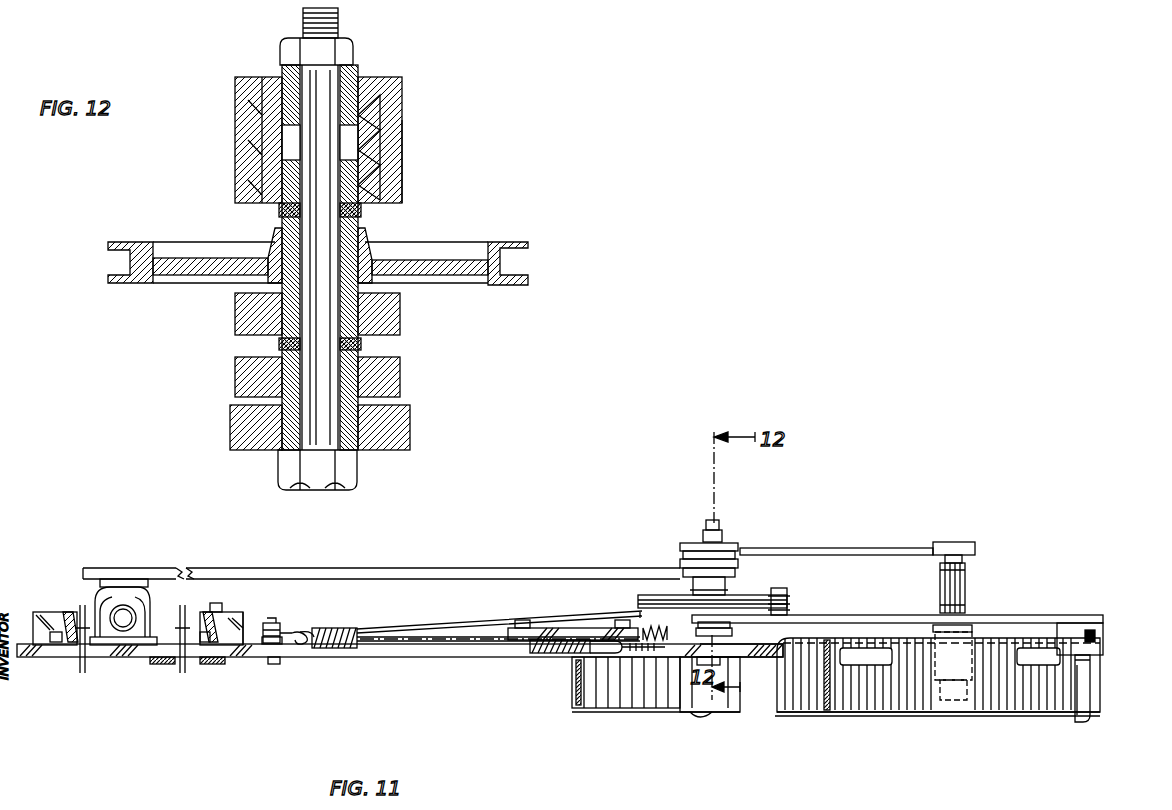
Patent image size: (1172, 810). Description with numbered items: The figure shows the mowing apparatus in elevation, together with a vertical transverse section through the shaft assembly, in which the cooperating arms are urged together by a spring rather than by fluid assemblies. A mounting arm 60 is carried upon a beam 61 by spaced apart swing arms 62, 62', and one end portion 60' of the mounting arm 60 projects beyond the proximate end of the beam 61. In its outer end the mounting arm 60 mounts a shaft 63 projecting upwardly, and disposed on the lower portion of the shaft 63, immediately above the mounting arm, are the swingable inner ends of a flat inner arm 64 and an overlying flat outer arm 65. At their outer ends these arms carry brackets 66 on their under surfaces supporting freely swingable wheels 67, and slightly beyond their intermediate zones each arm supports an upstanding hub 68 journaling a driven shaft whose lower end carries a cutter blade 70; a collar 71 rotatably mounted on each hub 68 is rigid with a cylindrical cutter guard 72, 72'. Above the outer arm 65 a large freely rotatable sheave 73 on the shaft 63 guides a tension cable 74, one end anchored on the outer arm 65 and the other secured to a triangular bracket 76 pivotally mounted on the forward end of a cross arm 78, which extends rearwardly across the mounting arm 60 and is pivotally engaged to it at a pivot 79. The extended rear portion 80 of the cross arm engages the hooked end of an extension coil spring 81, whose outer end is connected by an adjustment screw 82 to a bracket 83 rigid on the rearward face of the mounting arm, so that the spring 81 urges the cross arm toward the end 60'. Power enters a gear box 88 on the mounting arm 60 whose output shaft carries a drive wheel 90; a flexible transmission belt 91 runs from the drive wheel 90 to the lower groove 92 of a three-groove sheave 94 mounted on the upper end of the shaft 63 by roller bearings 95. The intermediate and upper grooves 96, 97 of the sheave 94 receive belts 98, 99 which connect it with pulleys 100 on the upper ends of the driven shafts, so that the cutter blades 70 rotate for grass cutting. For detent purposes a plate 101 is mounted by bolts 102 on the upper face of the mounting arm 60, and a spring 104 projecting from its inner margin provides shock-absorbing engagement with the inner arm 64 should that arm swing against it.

In FIG. 11, the mounting arm 60 is at (400, 688).
In FIG. 11, the projecting end portion of arm 60 60' is at (749, 700).
In FIG. 11, the beam 61 is at (272, 623).
In FIG. 11, the swing arm 62 is at (236, 590).
In FIG. 11, the swing arm 62' is at (51, 595).
In FIG. 12, the shaft 63 is at (338, 16).
In FIG. 11, the shaft 63 is at (718, 522).
In FIG. 12, the inner arm 64 is at (400, 315).
In FIG. 11, the inner arm 64 is at (685, 636).
In FIG. 12, the outer arm 65 is at (400, 372).
In FIG. 11, the outer arm 65 is at (1080, 615).
In FIG. 11, the bracket 66 is at (1103, 640).
In FIG. 11, the wheel 67 is at (1090, 700).
In FIG. 11, the upstanding hub 68 is at (972, 628).
In FIG. 11, the cutter blade 70 is at (600, 708).
In FIG. 11, the collar 71 is at (965, 635).
In FIG. 11, the cutter guard 72 is at (622, 690).
In FIG. 11, the cutter guard 72' is at (937, 704).
In FIG. 12, the sheave 73 is at (515, 242).
In FIG. 11, the sheave 73 is at (750, 598).
In FIG. 11, the tension cable 74 is at (365, 630).
In FIG. 11, the triangular bracket 76 is at (350, 625).
In FIG. 11, the cross arm 78 is at (243, 645).
In FIG. 11, the pivot 79 is at (273, 664).
In FIG. 11, the extended rear portion of cross arm 80 is at (270, 644).
In FIG. 11, the extension coil spring 81 is at (335, 648).
In FIG. 11, the adjustment screw 82 is at (580, 653).
In FIG. 11, the bracket 83 is at (612, 653).
In FIG. 11, the gear box 88 is at (120, 640).
In FIG. 11, the drive wheel 90 is at (160, 568).
In FIG. 12, the flexible transmission belt 91 is at (402, 193).
In FIG. 11, the flexible transmission belt 91 is at (300, 628).
In FIG. 12, the lower groove 92 is at (402, 178).
In FIG. 12, the three-groove sheave 94 is at (282, 80).
In FIG. 12, the roller bearings 95 is at (350, 75).
In FIG. 11, the roller bearings 95 is at (730, 545).
In FIG. 12, the intermediate groove 96 is at (380, 140).
In FIG. 12, the upper groove 97 is at (400, 95).
In FIG. 12, the belt 98 is at (380, 160).
In FIG. 11, the belt 98 is at (780, 590).
In FIG. 12, the belt 99 is at (380, 105).
In FIG. 11, the belt 99 is at (855, 548).
In FIG. 11, the pulley 100 is at (965, 575).
In FIG. 11, the plate 101 is at (560, 628).
In FIG. 11, the bolts 102 is at (522, 620).
In FIG. 11, the spring 104 is at (655, 626).